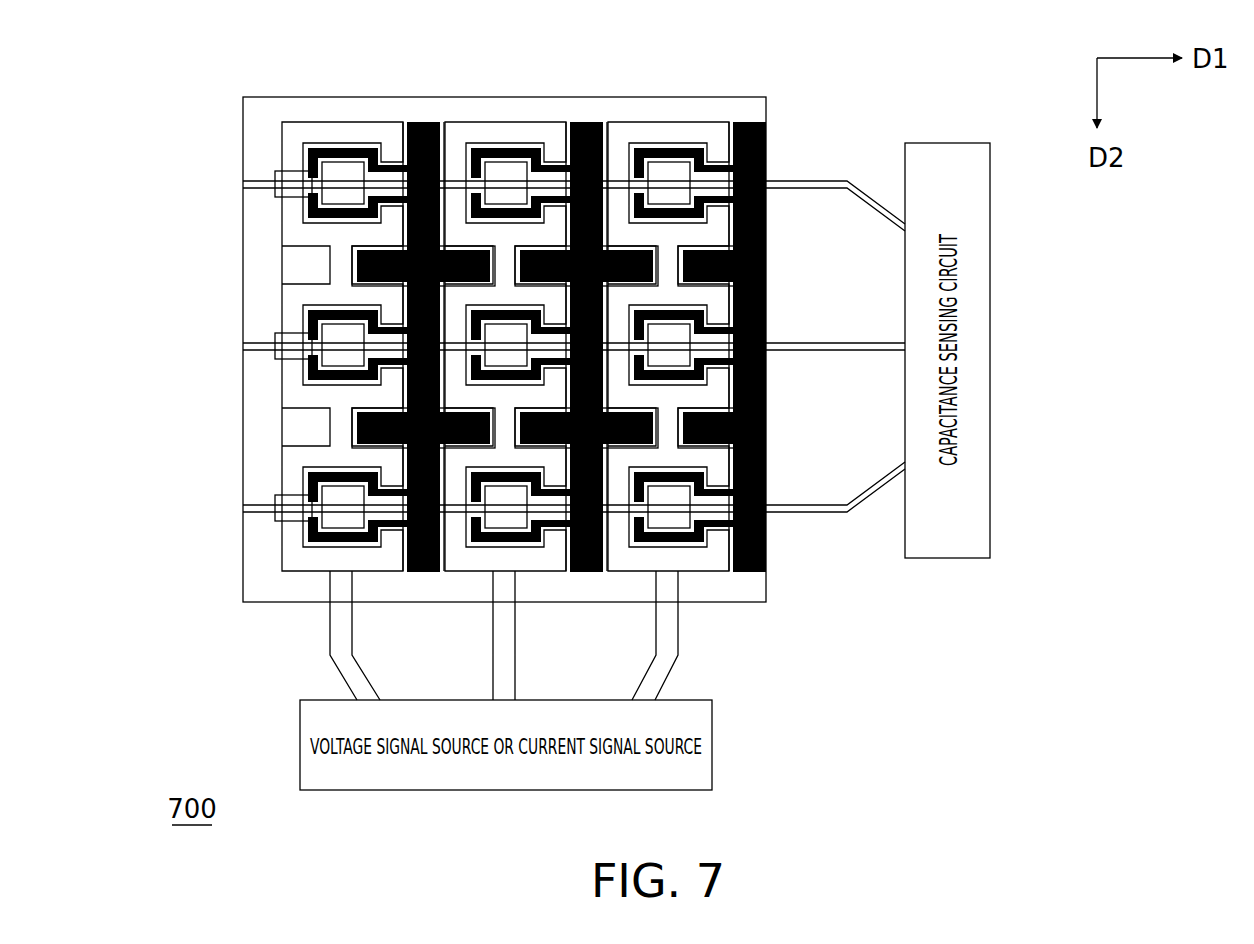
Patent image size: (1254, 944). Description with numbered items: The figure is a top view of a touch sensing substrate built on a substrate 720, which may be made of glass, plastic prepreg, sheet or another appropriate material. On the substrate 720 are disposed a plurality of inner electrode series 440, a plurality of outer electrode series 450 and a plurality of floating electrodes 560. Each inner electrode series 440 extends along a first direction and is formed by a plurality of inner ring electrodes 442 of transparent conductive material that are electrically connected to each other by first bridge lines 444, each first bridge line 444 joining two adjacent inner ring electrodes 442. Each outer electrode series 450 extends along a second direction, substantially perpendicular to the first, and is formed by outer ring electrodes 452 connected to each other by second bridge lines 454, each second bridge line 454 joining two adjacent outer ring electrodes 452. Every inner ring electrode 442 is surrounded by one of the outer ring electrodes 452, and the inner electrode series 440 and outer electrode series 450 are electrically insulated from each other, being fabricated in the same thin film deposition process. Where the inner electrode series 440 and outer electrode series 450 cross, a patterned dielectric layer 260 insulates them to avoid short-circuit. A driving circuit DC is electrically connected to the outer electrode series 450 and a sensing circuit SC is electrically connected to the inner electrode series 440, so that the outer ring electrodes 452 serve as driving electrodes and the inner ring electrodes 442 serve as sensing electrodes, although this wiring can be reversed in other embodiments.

The inner electrode series 440 is at (478, 302).
The inner ring electrode 442 is at (340, 172).
The first bridge line 444 is at (418, 124).
The outer electrode series 450 is at (480, 389).
The outer ring electrode 452 is at (348, 136).
The second bridge line 454 is at (340, 267).
The floating electrode 560 is at (590, 122).
The patterned dielectric layer 260 is at (275, 197).
The substrate 720 is at (730, 605).
The sensing circuit SC is at (879, 490).
The driving circuit DC is at (670, 681).